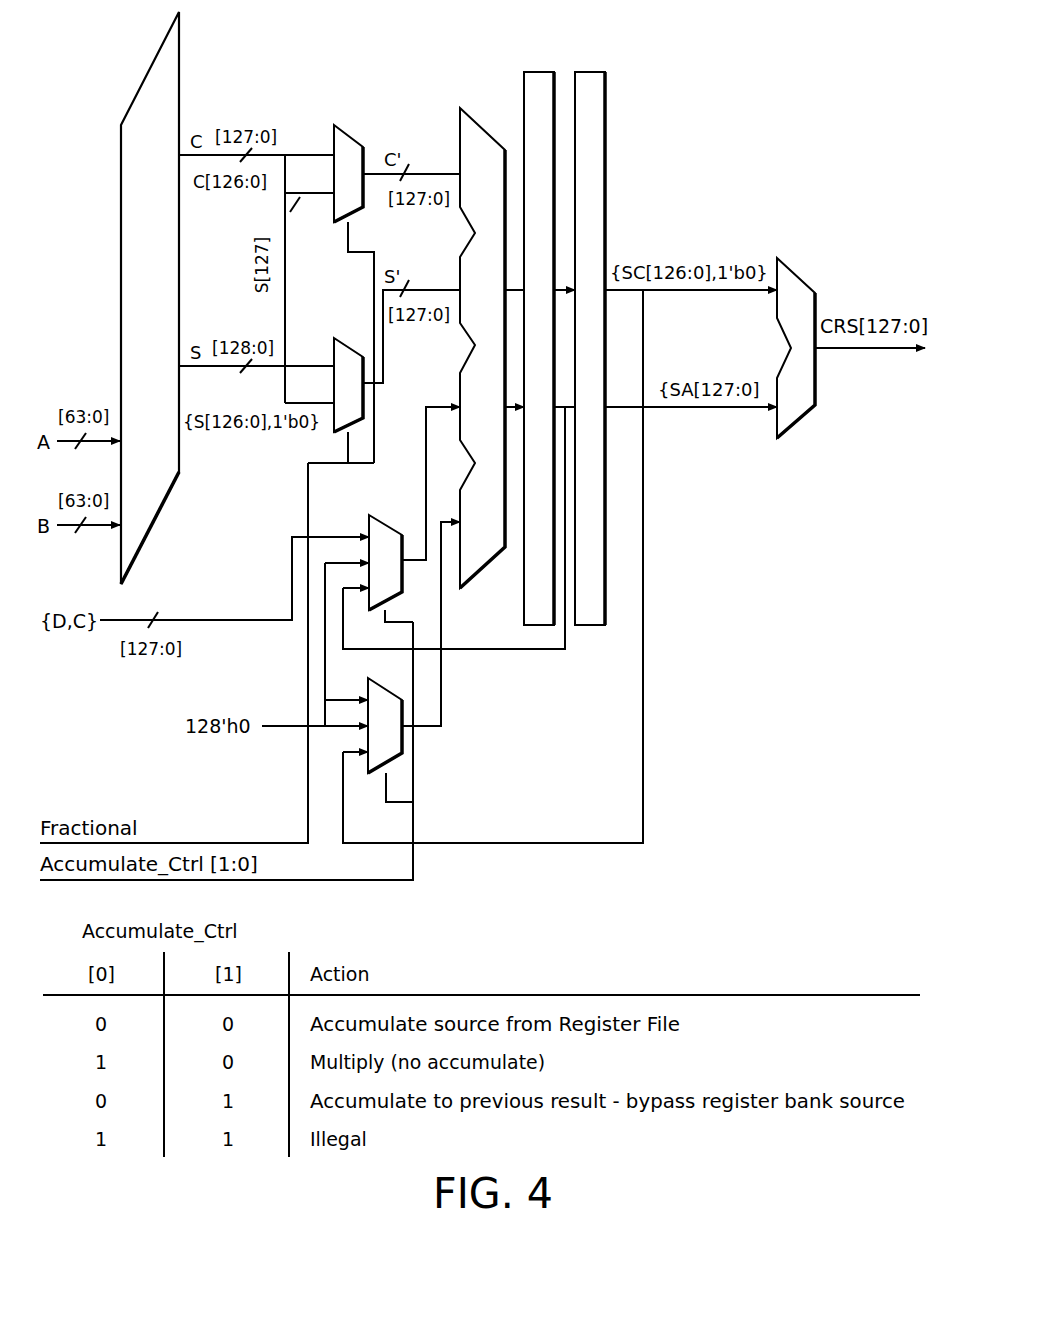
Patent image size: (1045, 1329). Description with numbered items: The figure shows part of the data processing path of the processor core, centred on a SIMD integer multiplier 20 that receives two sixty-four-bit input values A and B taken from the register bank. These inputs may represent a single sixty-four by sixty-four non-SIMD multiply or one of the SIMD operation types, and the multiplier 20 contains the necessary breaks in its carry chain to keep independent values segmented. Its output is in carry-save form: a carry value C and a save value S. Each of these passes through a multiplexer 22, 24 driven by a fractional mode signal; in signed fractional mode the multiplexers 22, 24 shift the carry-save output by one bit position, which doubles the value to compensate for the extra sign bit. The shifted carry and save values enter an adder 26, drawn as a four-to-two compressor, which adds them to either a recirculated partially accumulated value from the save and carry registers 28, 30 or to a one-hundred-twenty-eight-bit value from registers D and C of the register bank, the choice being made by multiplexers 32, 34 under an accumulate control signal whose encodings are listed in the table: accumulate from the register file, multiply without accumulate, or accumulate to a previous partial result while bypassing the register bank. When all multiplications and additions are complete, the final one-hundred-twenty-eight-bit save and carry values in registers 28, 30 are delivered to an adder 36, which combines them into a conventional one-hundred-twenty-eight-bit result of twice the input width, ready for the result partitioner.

The SIMD integer multiplier 20 is at (142, 88).
The multiplexer 22 is at (338, 345).
The multiplexer 24 is at (347, 137).
The adder 26 is at (482, 128).
The save register 28 is at (538, 72).
The carry register 30 is at (589, 72).
The multiplexer 32 is at (383, 523).
The multiplexer 34 is at (405, 748).
The adder 36 is at (790, 272).